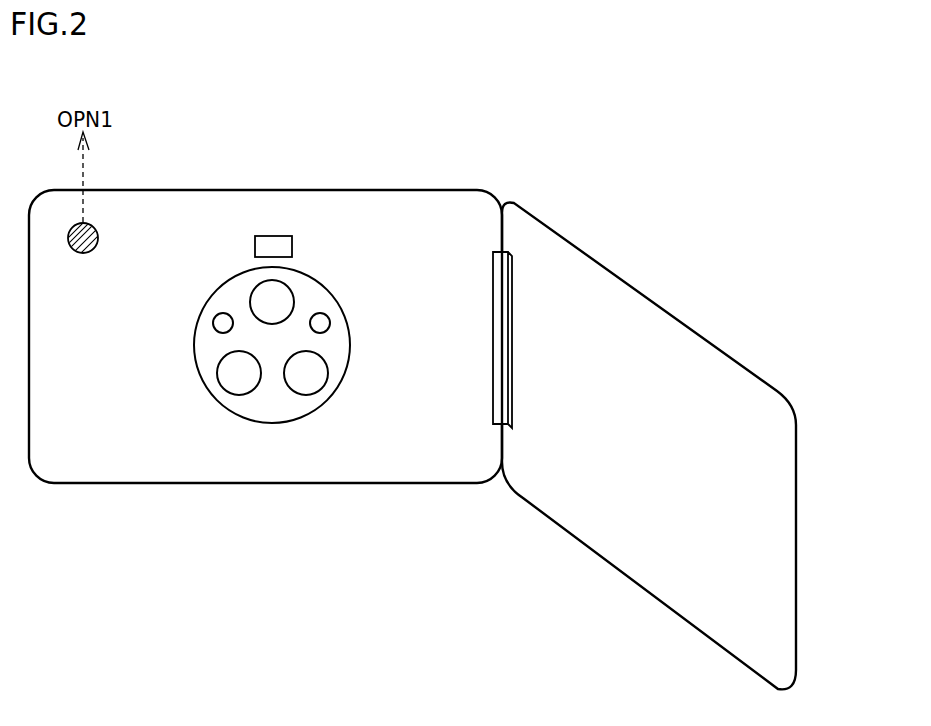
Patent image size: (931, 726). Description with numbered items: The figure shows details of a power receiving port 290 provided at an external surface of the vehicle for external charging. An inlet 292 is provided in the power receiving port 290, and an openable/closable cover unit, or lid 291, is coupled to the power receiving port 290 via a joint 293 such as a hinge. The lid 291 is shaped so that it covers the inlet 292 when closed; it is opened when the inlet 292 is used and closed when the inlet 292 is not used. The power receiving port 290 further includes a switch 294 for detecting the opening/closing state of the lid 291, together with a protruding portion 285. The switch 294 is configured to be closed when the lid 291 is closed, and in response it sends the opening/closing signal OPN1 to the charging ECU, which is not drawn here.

The protruding portion 285 is at (293, 236).
The power receiving port 290 is at (88, 445).
The lid 291 is at (628, 278).
The inlet 292 is at (282, 424).
The joint 293 is at (513, 280).
The switch 294 is at (96, 250).